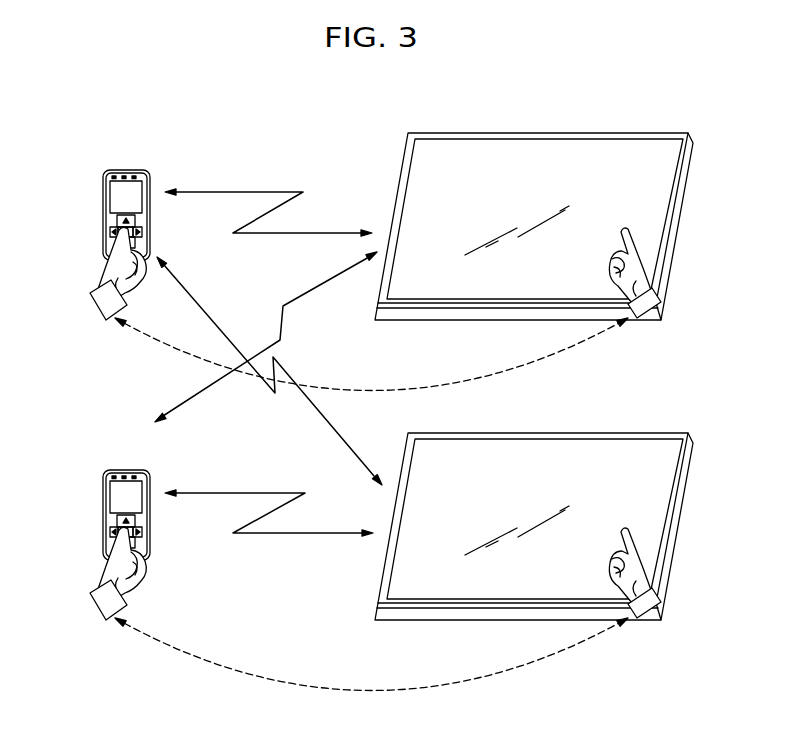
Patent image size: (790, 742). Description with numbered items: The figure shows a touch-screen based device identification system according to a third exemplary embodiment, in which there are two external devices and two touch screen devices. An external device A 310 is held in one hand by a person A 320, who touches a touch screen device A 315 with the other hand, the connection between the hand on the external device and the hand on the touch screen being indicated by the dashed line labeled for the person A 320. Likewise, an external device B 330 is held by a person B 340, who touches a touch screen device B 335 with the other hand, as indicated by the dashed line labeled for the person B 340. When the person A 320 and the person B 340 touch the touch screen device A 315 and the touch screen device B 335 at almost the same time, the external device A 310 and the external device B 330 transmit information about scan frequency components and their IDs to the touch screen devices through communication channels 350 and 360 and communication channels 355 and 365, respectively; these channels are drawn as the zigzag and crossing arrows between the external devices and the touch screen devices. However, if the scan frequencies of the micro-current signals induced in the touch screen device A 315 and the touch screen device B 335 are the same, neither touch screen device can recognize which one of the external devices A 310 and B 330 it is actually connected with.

The external device A 310 is at (126, 219).
The touch screen device A 315 is at (534, 226).
The person A 320 is at (374, 386).
The external device B 330 is at (126, 519).
The touch screen device B 335 is at (534, 526).
The person B 340 is at (375, 687).
The communication channel 350 is at (282, 190).
The communication channel 355 is at (302, 537).
The communication channel 360 is at (204, 309).
The communication channel 365 is at (325, 296).